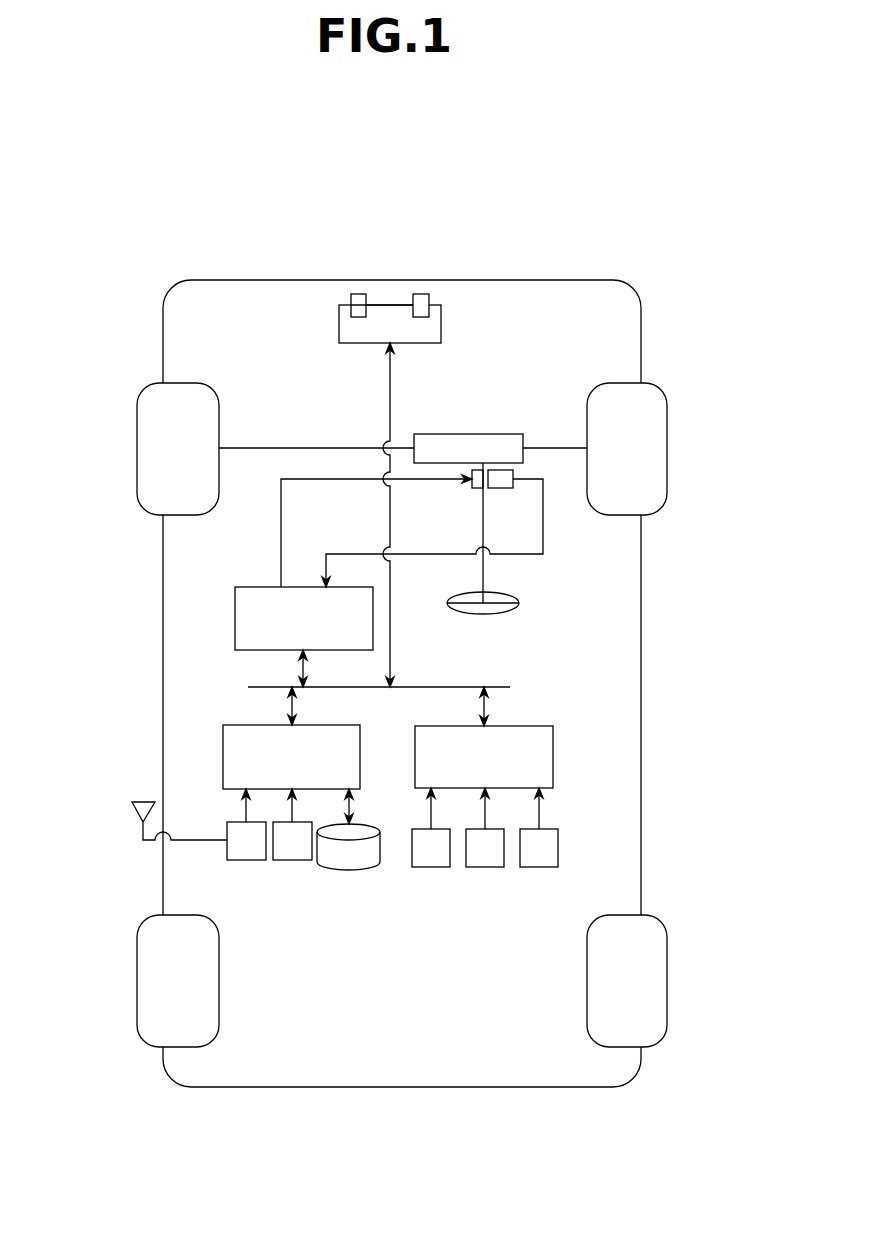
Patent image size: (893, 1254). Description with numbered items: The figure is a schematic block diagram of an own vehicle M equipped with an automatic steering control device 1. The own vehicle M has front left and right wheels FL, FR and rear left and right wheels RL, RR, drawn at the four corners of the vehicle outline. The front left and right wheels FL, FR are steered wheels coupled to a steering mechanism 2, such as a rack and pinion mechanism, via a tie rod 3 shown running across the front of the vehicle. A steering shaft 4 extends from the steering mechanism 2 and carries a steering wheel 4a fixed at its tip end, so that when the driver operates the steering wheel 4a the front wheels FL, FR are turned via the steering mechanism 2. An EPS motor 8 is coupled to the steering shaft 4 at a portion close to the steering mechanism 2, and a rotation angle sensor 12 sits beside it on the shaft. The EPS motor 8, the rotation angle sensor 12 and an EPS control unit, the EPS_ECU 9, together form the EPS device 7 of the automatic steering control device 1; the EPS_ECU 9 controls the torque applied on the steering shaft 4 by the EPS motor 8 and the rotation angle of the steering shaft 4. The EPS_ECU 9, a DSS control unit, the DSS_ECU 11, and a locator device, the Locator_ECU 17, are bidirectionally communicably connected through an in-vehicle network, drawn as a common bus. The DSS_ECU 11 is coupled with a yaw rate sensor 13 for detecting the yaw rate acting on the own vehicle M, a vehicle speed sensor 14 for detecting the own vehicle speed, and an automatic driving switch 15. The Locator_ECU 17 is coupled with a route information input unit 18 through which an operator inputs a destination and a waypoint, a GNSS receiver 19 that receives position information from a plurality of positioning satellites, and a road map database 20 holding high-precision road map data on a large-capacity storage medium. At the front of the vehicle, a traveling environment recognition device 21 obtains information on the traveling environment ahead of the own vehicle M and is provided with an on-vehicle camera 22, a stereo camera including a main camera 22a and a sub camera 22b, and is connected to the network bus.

The automatic steering control device 1 is at (537, 660).
The steering mechanism 2 is at (470, 434).
The tie rod 3 is at (283, 448).
The steering shaft 4 is at (481, 522).
The steering wheel 4a is at (490, 614).
The EPS device 7 is at (370, 562).
The EPS motor 8 is at (470, 482).
The EPS control unit (EPS_ECU) 9 is at (235, 620).
The DSS control unit (DSS_ECU) 11 is at (541, 724).
The rotation angle sensor 12 is at (500, 490).
The yaw rate sensor 13 is at (430, 869).
The vehicle speed sensor 14 is at (484, 869).
The automatic driving switch 15 is at (538, 869).
The locator device (Locator_ECU) 17 is at (238, 727).
The route information input unit 18 is at (291, 862).
The GNSS receiver 19 is at (247, 862).
The road map database 20 is at (350, 868).
The traveling environment recognition device 21 is at (339, 328).
The on-vehicle camera 22 is at (447, 225).
The main camera 22a is at (421, 294).
The sub camera 22b is at (357, 294).
The own vehicle M is at (551, 259).
The front left wheel FL is at (137, 437).
The front right wheel FR is at (667, 448).
The rear left wheel RL is at (137, 968).
The rear right wheel RR is at (667, 975).